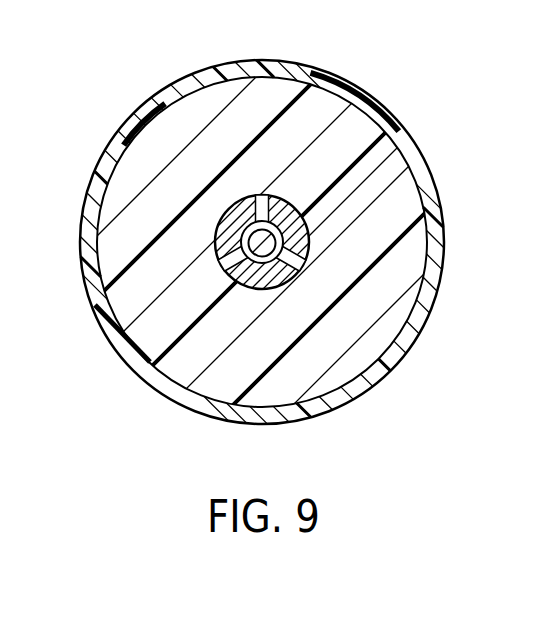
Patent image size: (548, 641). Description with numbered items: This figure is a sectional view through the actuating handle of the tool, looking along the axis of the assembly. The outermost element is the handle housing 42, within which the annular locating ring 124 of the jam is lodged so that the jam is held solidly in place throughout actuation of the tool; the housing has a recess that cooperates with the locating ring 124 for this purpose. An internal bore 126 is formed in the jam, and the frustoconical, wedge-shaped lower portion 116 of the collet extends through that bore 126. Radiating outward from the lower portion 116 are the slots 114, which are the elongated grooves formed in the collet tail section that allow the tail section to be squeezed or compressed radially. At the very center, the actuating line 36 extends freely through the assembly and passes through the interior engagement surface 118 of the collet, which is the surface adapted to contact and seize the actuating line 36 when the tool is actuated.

The actuating line 36 is at (282, 246).
The handle housing 42 is at (131, 118).
The elongated groove 114 is at (262, 200).
The lower portion 116 is at (250, 288).
The interior surface 118 is at (300, 216).
The locating ring 124 is at (125, 235).
The internal bore 126 is at (398, 132).